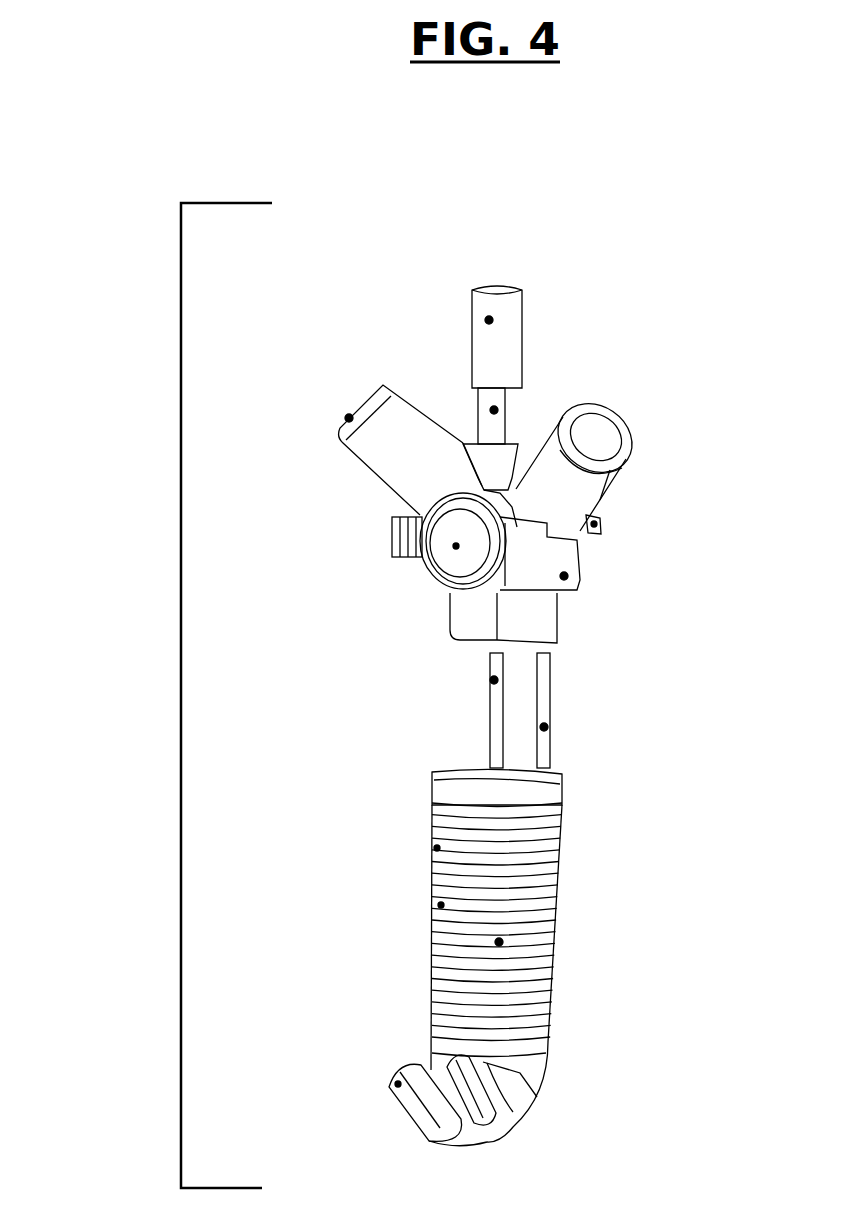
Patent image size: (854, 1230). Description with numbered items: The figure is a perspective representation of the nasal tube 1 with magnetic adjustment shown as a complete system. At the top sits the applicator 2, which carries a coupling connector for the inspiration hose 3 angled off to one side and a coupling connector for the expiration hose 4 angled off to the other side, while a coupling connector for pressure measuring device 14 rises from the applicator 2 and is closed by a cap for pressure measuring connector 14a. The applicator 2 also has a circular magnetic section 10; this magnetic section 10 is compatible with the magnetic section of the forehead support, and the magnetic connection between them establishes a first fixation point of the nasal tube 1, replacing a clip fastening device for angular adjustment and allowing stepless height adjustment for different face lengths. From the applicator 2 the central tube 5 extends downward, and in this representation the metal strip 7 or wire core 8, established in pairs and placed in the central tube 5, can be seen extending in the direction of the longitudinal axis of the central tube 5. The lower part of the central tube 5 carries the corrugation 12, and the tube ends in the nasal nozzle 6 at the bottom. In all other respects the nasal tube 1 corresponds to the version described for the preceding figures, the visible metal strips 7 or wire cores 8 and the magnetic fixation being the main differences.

The nasal tube 1 is at (138, 268).
The applicator 2 is at (564, 576).
The coupling connector for the inspiration hose 3 is at (347, 416).
The coupling connector for the expiration hose 4 is at (634, 432).
The central tube 5 is at (470, 919).
The nasal nozzle 6 is at (405, 1095).
The metal strip 7 is at (496, 679).
The wire core 8 is at (545, 727).
The magnetic section 10 is at (600, 518).
The corrugation 12 is at (437, 848).
The coupling connector for pressure measuring device 14 is at (503, 412).
The cap for pressure measuring connector 14a is at (489, 320).